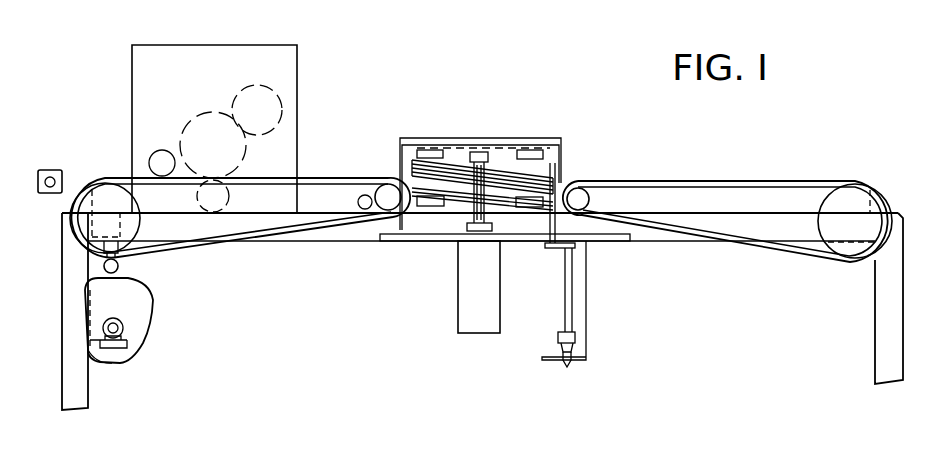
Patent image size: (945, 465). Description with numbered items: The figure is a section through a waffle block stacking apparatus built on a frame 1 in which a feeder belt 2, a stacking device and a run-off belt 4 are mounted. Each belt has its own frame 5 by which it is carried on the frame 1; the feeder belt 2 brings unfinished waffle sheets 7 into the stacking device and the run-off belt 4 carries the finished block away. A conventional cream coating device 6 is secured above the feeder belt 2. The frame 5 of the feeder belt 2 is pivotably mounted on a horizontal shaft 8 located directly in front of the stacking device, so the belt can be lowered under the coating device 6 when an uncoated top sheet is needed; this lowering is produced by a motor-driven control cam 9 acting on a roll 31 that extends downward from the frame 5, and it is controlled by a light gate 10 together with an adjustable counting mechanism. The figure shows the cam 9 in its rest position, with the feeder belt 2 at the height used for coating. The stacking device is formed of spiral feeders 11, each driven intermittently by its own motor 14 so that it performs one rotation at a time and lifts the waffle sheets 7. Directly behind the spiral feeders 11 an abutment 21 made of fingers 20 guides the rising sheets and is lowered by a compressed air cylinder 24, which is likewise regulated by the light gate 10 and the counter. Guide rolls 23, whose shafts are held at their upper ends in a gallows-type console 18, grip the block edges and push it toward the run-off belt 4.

The frame 1 is at (885, 300).
The feeder belt 2 is at (310, 180).
The run-off belt 4 is at (622, 187).
The frame 5 is at (343, 200).
The cream coating device 6 is at (270, 83).
The waffle sheets 7 is at (455, 160).
The horizontal shaft 8 is at (362, 208).
The control cam 9 is at (132, 310).
The light gate 10 is at (47, 165).
The spiral feeders 11 is at (488, 187).
The motor 14 is at (468, 298).
The gallows-type console 18 is at (402, 142).
The fingers 20 is at (553, 178).
The abutment 21 is at (550, 256).
The guide rolls 23 is at (522, 192).
The compressed air cylinder 24 is at (567, 297).
The roll 31 is at (118, 268).